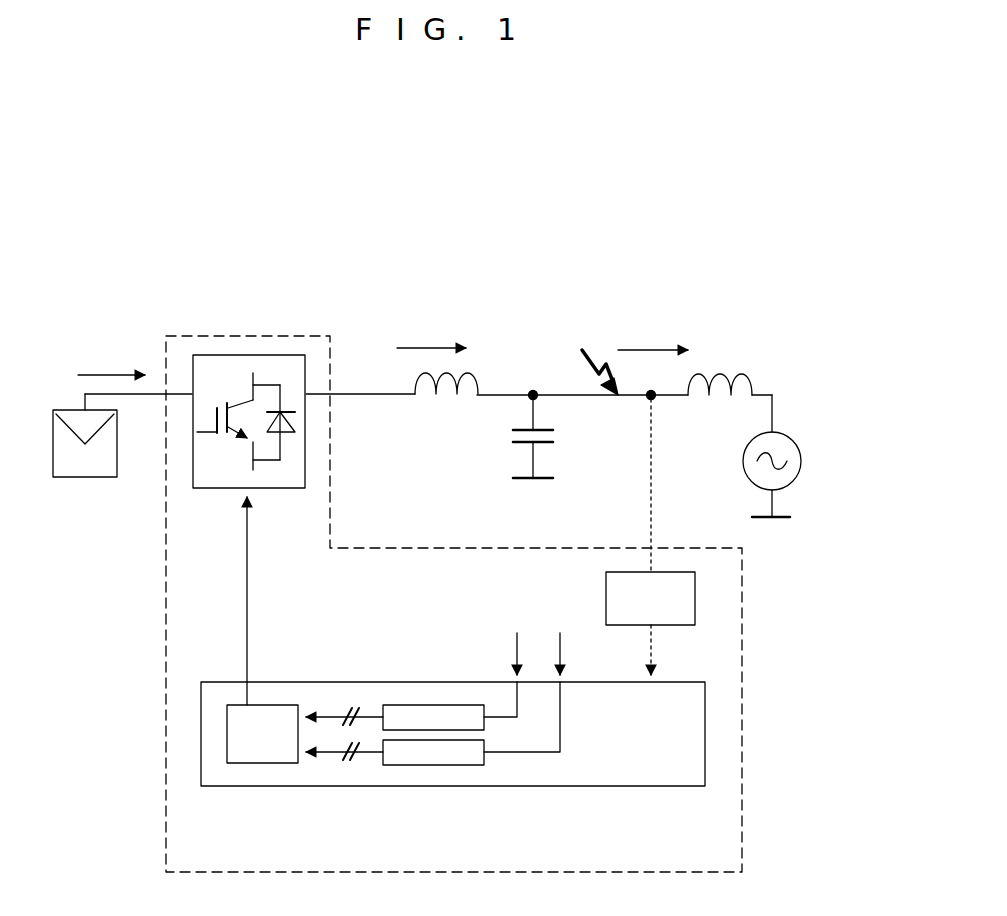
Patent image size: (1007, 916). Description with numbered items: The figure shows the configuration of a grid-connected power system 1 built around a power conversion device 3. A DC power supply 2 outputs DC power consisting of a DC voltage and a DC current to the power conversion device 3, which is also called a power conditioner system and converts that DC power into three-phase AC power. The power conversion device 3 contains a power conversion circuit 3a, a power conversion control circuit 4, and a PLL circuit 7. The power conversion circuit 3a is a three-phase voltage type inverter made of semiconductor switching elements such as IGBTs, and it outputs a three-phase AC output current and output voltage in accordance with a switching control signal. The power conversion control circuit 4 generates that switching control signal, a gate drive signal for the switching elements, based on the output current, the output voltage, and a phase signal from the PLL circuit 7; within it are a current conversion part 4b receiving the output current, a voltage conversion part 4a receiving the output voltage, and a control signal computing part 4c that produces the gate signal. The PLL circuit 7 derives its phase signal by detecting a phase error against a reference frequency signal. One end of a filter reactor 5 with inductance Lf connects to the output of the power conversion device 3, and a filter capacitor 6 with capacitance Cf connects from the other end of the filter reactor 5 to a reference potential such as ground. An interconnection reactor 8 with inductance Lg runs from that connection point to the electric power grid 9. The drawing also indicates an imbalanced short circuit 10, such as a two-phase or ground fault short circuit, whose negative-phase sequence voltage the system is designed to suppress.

The grid-connected power system 1 is at (438, 222).
The DC power supply 2 is at (70, 477).
The power conversion device 3 is at (166, 623).
The power conversion circuit 3a is at (205, 490).
The power conversion control circuit 4 is at (201, 730).
The voltage conversion part 4a is at (447, 765).
The current conversion part 4b is at (433, 705).
The control signal computing part 4c is at (268, 747).
The filter reactor 5 is at (413, 393).
The filter capacitor 6 is at (543, 445).
The PLL circuit 7 is at (695, 602).
The interconnection reactor 8 is at (742, 375).
The electric power grid 9 is at (785, 428).
The imbalanced short circuit 10 is at (577, 353).